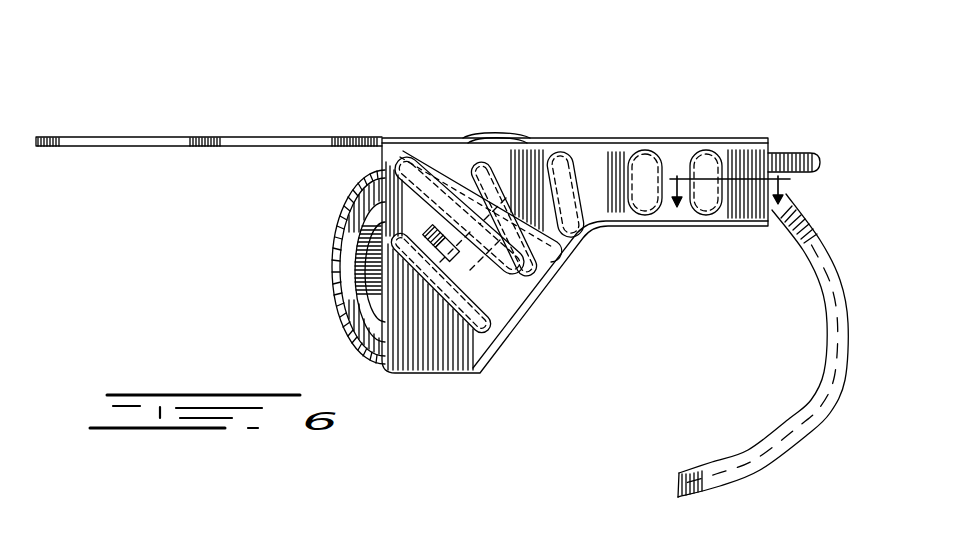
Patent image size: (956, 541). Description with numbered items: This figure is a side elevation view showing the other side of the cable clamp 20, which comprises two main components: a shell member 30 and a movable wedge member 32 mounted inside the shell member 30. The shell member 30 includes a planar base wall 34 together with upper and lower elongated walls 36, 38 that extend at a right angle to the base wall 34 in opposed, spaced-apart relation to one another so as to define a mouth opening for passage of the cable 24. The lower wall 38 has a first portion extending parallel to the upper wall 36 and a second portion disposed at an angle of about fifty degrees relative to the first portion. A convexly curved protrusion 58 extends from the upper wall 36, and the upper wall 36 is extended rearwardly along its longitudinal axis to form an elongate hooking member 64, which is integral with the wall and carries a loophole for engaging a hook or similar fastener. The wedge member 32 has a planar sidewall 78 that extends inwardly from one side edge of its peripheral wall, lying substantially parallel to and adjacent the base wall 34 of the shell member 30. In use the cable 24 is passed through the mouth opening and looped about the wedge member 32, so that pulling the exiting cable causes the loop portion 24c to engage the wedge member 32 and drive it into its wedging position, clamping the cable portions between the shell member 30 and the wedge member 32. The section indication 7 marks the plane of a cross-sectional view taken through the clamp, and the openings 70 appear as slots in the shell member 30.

The cable clamp 20 is at (687, 74).
The cable 24 is at (811, 152).
The loop portion 24c is at (335, 258).
The shell member 30 is at (298, 137).
The wedge member 32 is at (358, 283).
The base wall 34 is at (474, 343).
The upper wall 36 is at (705, 143).
The lower wall 38 is at (750, 227).
The convexly curved protrusion 58 is at (497, 132).
The hooking member 64 is at (203, 136).
The slots 70 is at (557, 157).
The sidewall 78 is at (365, 302).
The section line 7- 7 is at (735, 178).